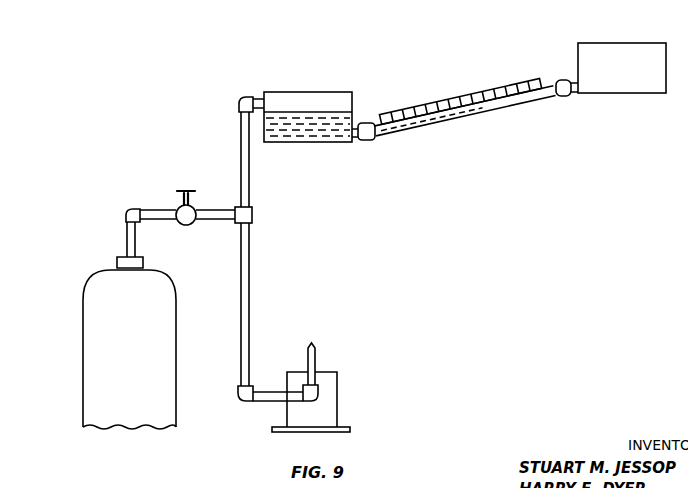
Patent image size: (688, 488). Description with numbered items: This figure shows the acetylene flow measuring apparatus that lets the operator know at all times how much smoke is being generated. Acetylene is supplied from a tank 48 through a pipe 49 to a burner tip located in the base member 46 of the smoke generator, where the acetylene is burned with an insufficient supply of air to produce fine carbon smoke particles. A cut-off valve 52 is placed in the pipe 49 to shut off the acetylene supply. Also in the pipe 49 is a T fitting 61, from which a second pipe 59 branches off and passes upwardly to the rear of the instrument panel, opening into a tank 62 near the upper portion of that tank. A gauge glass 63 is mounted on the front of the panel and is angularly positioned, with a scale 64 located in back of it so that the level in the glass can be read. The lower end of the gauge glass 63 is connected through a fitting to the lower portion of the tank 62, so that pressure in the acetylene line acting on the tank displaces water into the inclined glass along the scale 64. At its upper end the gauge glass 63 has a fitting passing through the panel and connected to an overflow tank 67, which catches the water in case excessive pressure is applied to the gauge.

The base member 46 is at (328, 401).
The tank 48 is at (98, 303).
The pipe 49 is at (246, 270).
The cut-off valve 52 is at (183, 212).
The pipe 59 is at (245, 181).
The T fitting 61 is at (254, 215).
The tank 62 is at (277, 105).
The gauge glass 63 is at (500, 103).
The scale 64 is at (498, 88).
The overflow tank 67 is at (633, 52).